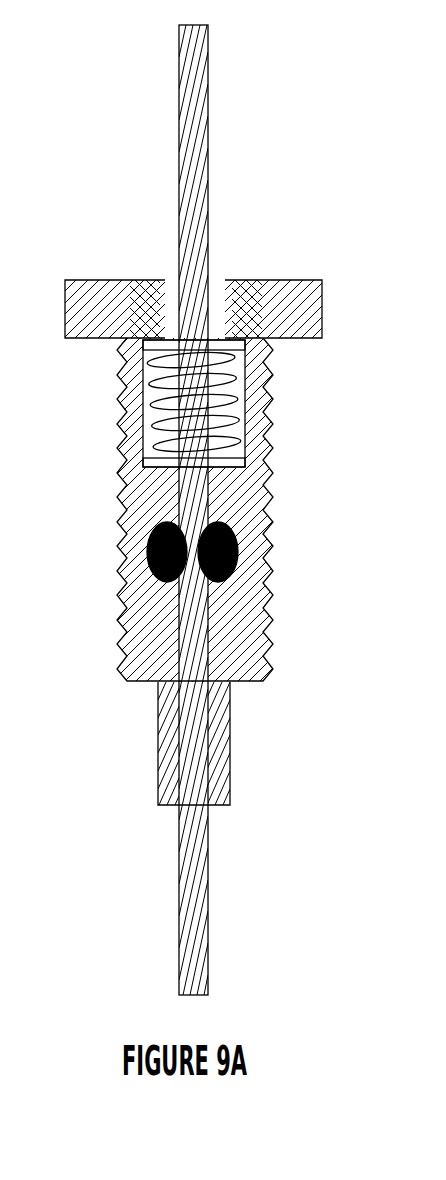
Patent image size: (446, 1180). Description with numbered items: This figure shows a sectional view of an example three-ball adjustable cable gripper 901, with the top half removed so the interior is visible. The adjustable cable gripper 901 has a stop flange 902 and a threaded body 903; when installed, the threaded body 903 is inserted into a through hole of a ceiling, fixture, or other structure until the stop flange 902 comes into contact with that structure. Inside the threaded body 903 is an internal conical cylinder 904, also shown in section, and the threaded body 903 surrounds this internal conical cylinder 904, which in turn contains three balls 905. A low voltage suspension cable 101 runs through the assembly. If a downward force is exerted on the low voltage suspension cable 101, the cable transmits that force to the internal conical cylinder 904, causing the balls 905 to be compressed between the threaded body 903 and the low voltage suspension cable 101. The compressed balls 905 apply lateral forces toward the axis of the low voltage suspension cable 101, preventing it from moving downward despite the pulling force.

The low voltage suspension cable 101 is at (195, 73).
The adjustable cable gripper 901 is at (300, 212).
The stop flange 902 is at (76, 300).
The threaded body 903 is at (126, 606).
The internal conical cylinder 904 is at (215, 720).
The balls 905 is at (238, 563).